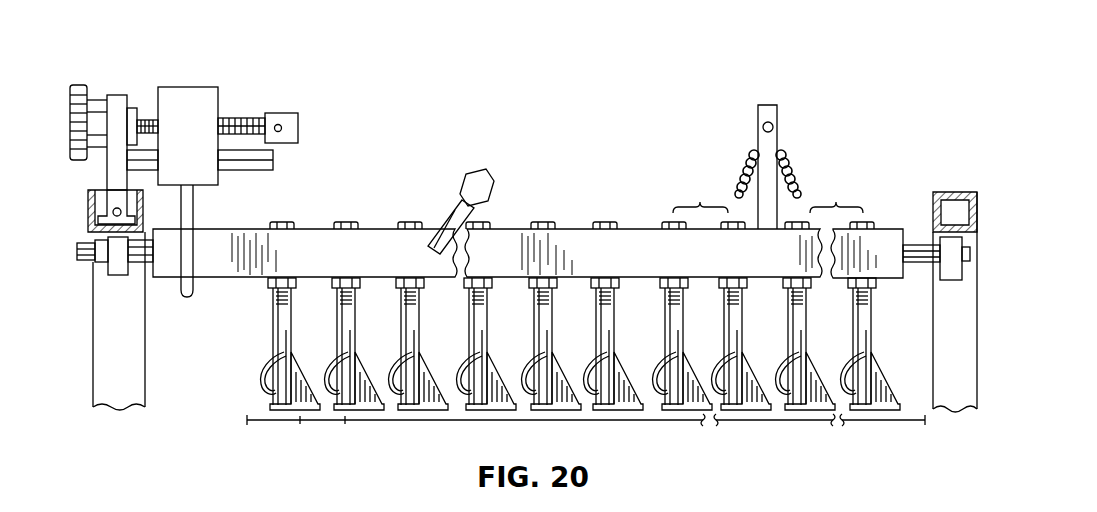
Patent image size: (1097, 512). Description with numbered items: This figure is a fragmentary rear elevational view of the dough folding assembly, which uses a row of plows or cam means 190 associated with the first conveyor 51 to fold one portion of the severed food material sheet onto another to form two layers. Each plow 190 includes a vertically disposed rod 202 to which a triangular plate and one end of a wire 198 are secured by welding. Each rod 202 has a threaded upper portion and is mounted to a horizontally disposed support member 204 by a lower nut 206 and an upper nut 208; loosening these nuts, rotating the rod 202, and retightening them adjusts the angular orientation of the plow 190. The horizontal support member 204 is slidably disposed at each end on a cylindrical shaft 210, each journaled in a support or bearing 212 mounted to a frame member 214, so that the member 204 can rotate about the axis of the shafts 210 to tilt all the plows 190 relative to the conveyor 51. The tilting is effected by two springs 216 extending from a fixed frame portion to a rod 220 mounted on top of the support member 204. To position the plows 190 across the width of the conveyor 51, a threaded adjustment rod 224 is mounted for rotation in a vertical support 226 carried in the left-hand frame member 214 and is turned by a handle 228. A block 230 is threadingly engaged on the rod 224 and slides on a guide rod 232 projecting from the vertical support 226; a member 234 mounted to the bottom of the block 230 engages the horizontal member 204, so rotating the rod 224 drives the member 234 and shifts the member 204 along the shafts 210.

The first conveyor 51 is at (248, 418).
The plow 190 is at (461, 360).
The wire 198 is at (270, 368).
The rod 202 is at (340, 330).
The horizontal support member 204 is at (640, 222).
The lower nut 206 is at (395, 289).
The upper nut 208 is at (298, 222).
The cylindrical shaft 210 is at (921, 250).
The bearing 212 is at (948, 283).
The frame member 214 is at (947, 192).
The spring 216 is at (745, 165).
The rod 220 is at (765, 110).
The threaded adjustment rod 224 is at (246, 119).
The vertical support 226 is at (135, 107).
The handle 228 is at (76, 84).
The block 230 is at (193, 87).
The guide rod 232 is at (275, 167).
The member 234 is at (194, 223).